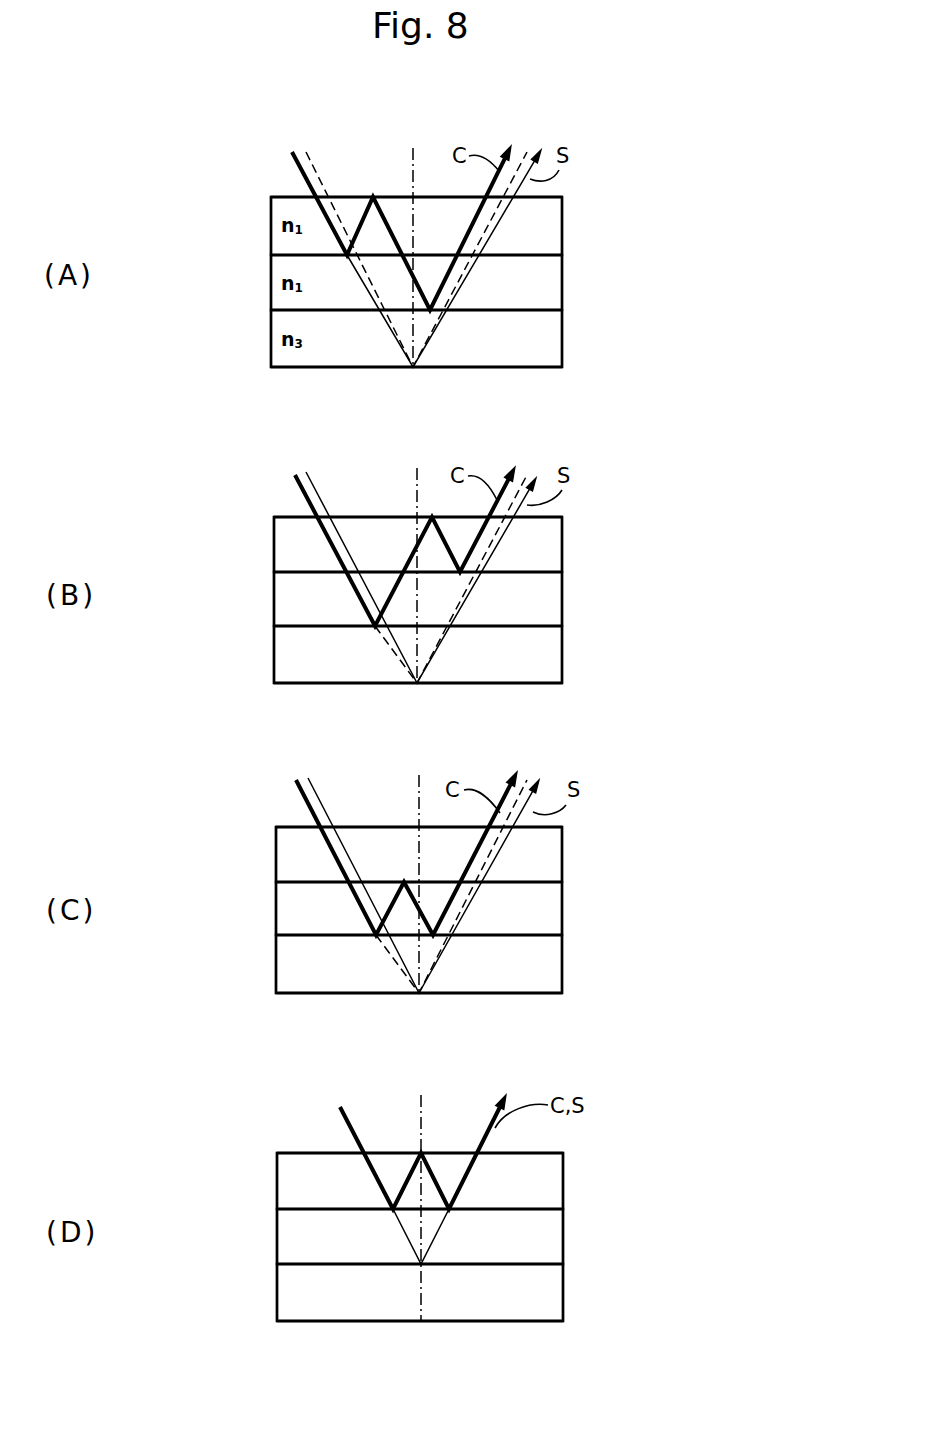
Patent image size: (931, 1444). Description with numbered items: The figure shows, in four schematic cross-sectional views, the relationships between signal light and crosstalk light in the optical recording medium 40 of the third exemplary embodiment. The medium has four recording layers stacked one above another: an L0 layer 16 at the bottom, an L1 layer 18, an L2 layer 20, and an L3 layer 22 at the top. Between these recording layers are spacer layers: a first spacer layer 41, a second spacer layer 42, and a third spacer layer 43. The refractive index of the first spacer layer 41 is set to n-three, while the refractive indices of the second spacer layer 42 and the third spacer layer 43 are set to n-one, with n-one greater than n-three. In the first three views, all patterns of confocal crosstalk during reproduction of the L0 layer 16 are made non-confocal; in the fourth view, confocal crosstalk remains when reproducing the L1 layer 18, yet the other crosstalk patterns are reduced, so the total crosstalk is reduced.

The optical recording medium 40 is at (211, 149).
The L3 layer 22 is at (290, 197).
The L2 layer 20 is at (290, 255).
The L1 layer 18 is at (290, 310).
The L0 layer 16 is at (290, 367).
The third spacer layer 43 is at (556, 226).
The second spacer layer 42 is at (556, 274).
The first spacer layer 41 is at (556, 338).